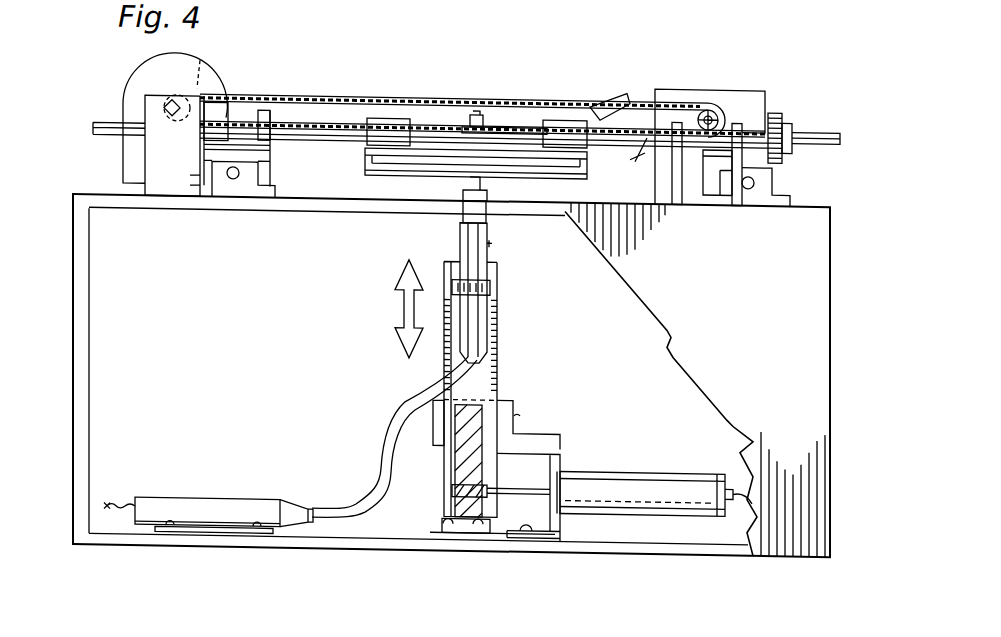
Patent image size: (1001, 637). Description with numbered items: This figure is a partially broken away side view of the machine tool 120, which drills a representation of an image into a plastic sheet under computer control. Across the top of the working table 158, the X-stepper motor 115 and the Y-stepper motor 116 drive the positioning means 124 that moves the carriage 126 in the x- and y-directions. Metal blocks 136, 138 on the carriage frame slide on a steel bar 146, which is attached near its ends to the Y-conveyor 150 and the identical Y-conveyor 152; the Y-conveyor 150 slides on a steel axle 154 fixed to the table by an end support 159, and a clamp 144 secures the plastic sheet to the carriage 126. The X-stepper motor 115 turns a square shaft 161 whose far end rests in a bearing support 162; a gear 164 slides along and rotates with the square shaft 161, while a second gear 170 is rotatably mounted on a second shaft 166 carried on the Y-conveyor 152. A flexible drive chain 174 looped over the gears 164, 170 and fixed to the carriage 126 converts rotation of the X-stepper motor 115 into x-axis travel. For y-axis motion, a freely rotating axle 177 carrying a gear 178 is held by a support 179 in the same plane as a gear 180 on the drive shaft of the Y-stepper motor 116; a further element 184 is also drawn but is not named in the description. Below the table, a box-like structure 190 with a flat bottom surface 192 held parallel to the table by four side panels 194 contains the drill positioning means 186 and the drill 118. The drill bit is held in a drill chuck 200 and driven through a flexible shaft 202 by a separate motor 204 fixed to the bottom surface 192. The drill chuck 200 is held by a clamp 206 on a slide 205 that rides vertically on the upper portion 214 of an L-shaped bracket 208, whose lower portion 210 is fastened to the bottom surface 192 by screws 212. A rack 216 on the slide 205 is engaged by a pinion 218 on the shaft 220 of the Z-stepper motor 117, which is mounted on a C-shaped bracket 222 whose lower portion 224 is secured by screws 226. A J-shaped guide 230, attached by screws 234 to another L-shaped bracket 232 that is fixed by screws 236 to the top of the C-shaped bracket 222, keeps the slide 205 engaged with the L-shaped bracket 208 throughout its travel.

The X-stepper motor 115 is at (127, 88).
The Y-stepper motor 116 is at (750, 85).
The Z-stepper motor 117 is at (645, 500).
The drill 118 is at (493, 238).
The machine tool 120 is at (63, 403).
The positioning means 124 is at (541, 80).
The carriage 126 is at (402, 112).
The metal block 136 is at (372, 119).
The metal block 138 is at (543, 110).
The clamp 144 is at (612, 84).
The steel bar 146 is at (833, 120).
The Y-conveyor 150 is at (272, 160).
The Y-conveyor 152 is at (677, 197).
The steel axle 154 is at (233, 177).
The working table 158 is at (830, 194).
The end support 159 is at (240, 147).
The square shaft 161 is at (173, 93).
The support 162 is at (167, 153).
The gear 164 is at (205, 62).
The second shaft 166 is at (712, 97).
The second gear 170 is at (665, 90).
The flexible drive chain 174 is at (313, 89).
The axle 177 is at (647, 128).
The gear 178 is at (790, 137).
The support 179 is at (700, 196).
The gear 180 is at (750, 198).
The gear 184 is at (783, 97).
The drill positioning means 186 is at (435, 494).
The box-like structure 190 is at (830, 397).
The bottom surface 192 is at (692, 522).
The side panels 194 is at (803, 477).
The drill chuck 200 is at (462, 220).
The flexible shaft 202 is at (333, 502).
The motor 204 is at (220, 461).
The slide 205 is at (495, 332).
The clamp 206 is at (492, 277).
The L-shaped bracket 208 is at (488, 530).
The lower portion 210 is at (475, 526).
The screws 212 is at (490, 504).
The upper portion 214 is at (443, 527).
The rack 216 is at (455, 449).
The pinion 218 is at (452, 474).
The shaft 220 is at (528, 476).
The C-shaped bracket 222 is at (562, 443).
The lower portion 224 is at (535, 524).
The screws 226 is at (548, 530).
The J-shaped guide 230 is at (438, 395).
The L-shaped bracket 232 is at (513, 392).
The screws 234 is at (522, 404).
The screws 236 is at (528, 423).